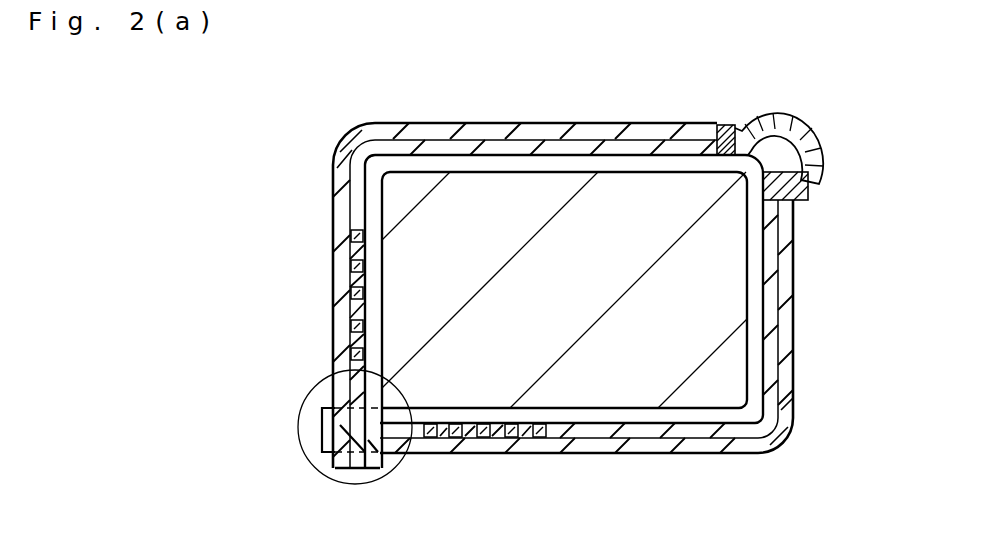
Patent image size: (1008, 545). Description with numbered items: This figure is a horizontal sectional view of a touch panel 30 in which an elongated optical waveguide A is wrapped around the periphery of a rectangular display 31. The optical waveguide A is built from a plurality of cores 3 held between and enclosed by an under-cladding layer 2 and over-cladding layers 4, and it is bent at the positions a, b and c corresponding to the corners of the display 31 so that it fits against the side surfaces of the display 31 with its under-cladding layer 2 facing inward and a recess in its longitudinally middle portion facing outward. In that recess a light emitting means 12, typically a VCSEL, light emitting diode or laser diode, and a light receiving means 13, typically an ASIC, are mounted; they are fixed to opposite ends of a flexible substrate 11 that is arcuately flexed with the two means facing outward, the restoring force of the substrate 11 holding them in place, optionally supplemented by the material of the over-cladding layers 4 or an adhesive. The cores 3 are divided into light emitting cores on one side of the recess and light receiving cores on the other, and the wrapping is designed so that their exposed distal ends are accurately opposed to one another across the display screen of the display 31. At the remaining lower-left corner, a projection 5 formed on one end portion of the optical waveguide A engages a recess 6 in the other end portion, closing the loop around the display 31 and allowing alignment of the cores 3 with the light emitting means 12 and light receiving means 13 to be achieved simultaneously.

The touch panel 30 is at (399, 100).
The display 31 is at (477, 188).
The under-cladding layer 2 is at (400, 430).
The cores 3 is at (350, 266).
The over-cladding layers 4 is at (348, 333).
The projection 5 is at (357, 468).
The recess 6 is at (327, 412).
The flexible substrate 11 is at (800, 130).
The light emitting means 12 is at (725, 128).
The light receiving means 13 is at (808, 195).
The optical waveguide A is at (601, 120).
The bending position a is at (800, 458).
The bending position b is at (854, 137).
The bending position c is at (330, 121).